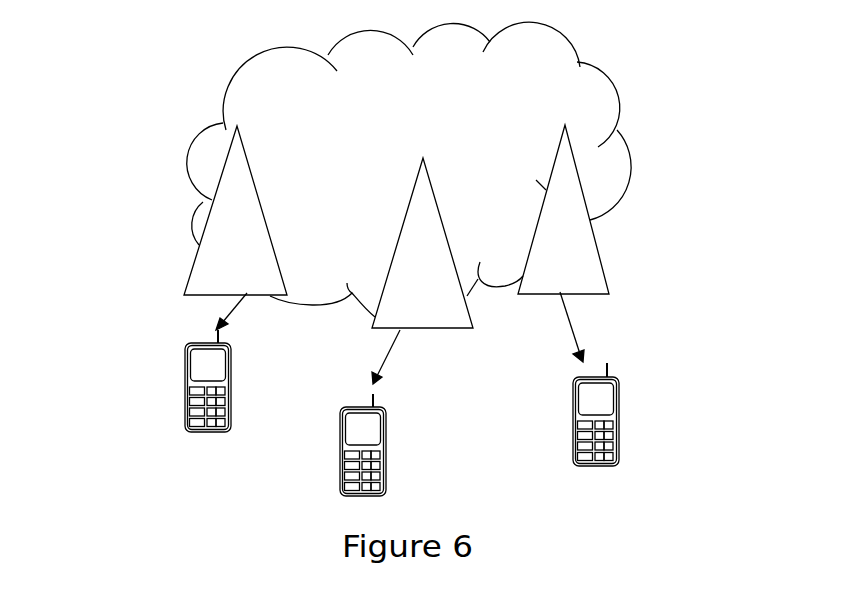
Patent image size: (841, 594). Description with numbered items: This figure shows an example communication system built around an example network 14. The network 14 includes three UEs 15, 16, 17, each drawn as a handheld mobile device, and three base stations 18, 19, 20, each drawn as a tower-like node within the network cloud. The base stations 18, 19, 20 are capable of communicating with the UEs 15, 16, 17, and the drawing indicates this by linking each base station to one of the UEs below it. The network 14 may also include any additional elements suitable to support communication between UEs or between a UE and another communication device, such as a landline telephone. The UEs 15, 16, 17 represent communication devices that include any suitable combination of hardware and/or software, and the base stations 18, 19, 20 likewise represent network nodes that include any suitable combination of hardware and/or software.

The network 14 is at (257, 100).
The UE 15 is at (185, 390).
The UE 16 is at (340, 447).
The UE 17 is at (619, 416).
The base station 18 is at (220, 238).
The base station 19 is at (405, 271).
The base station 20 is at (549, 235).